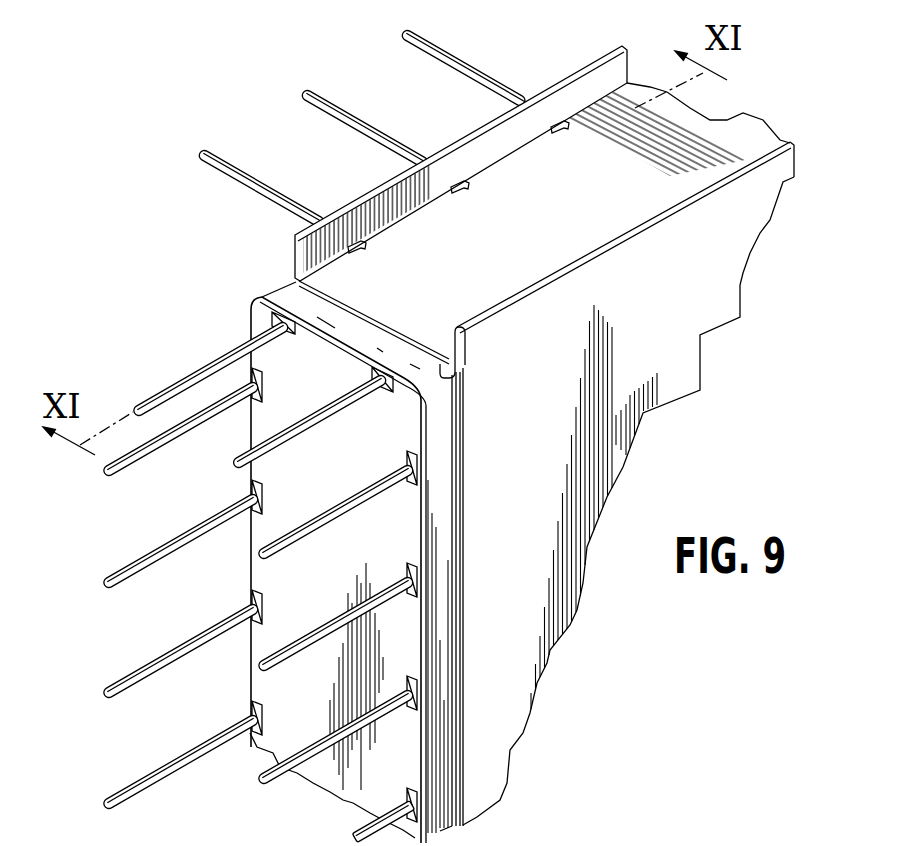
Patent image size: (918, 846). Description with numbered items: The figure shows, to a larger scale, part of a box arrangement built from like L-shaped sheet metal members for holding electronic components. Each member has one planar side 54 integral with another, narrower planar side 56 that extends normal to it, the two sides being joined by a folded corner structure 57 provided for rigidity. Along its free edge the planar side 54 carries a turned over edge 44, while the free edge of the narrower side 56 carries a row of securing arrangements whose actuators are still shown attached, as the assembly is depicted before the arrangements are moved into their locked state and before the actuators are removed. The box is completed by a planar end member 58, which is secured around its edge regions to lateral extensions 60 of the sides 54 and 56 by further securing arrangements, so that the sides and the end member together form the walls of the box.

The turned over edge 44 is at (312, 250).
The planar side 54 is at (693, 368).
The planar side 56 is at (698, 130).
The folded corner structure 57 is at (750, 158).
The planar end member 58 is at (310, 573).
The lateral extension 60 is at (296, 282).